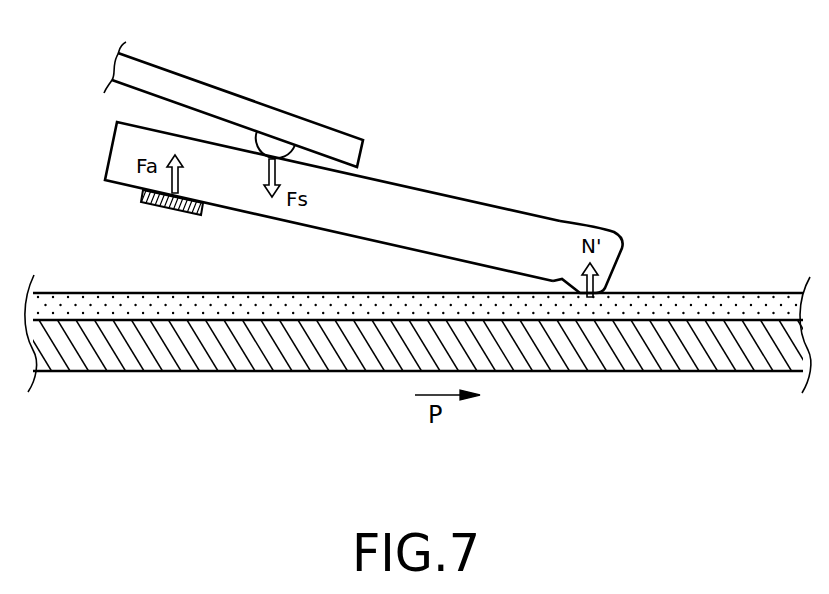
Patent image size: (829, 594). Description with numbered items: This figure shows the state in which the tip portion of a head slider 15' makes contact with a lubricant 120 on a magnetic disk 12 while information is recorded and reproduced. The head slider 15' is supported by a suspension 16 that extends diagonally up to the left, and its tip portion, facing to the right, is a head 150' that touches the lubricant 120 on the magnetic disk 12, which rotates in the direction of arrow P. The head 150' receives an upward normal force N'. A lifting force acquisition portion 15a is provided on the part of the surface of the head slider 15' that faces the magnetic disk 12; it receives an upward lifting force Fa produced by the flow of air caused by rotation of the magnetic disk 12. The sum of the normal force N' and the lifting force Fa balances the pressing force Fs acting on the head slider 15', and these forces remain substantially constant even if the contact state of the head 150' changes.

The suspension 16 is at (218, 88).
The head slider 15' is at (332, 172).
The head 150' is at (640, 257).
The lifting force acquisition portion 15a is at (155, 210).
The lubricant 120 is at (758, 302).
The magnetic disk 12 is at (675, 363).